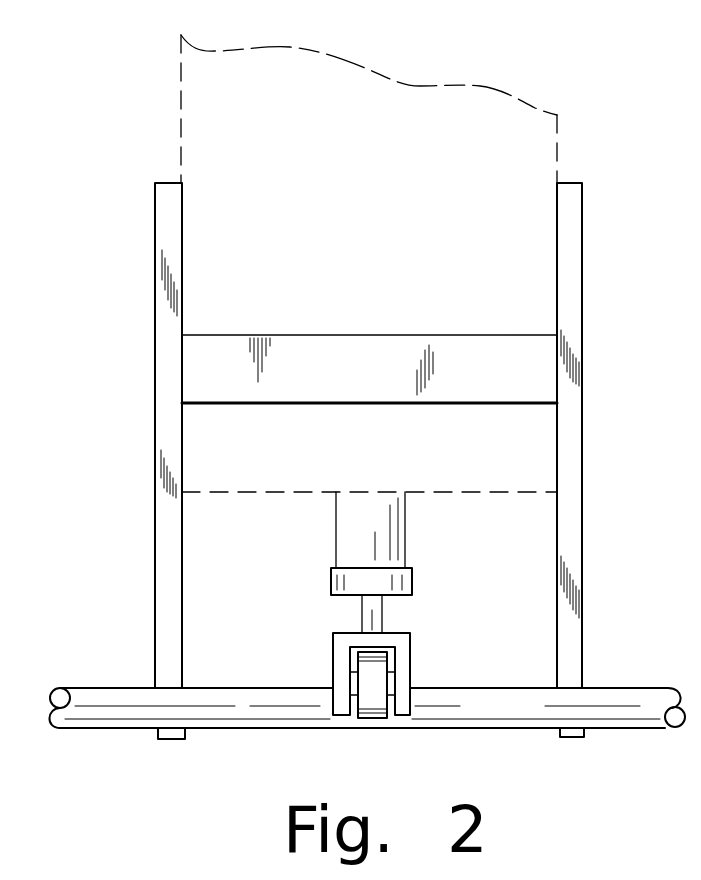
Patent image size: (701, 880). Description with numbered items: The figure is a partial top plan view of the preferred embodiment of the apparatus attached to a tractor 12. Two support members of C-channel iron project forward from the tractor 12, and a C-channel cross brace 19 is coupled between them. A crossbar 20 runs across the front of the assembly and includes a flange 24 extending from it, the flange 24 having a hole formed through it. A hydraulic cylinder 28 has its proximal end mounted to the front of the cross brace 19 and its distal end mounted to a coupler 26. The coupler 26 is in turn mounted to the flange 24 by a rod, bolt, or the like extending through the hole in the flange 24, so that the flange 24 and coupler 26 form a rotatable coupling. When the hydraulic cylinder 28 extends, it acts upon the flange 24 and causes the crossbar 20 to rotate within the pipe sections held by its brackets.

The tractor 12 is at (404, 78).
The cross brace 19 is at (525, 404).
The crossbar 20 is at (637, 729).
The flange 24 is at (376, 681).
The coupler 26 is at (333, 655).
The hydraulic cylinder 28 is at (407, 522).